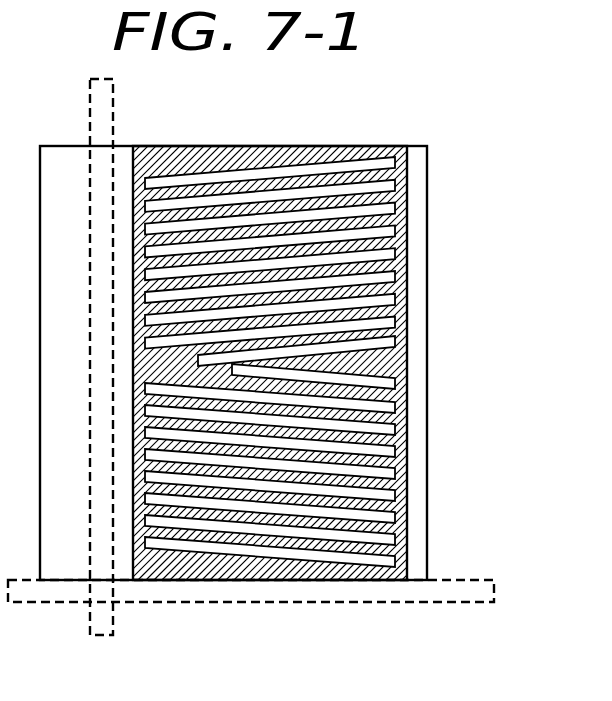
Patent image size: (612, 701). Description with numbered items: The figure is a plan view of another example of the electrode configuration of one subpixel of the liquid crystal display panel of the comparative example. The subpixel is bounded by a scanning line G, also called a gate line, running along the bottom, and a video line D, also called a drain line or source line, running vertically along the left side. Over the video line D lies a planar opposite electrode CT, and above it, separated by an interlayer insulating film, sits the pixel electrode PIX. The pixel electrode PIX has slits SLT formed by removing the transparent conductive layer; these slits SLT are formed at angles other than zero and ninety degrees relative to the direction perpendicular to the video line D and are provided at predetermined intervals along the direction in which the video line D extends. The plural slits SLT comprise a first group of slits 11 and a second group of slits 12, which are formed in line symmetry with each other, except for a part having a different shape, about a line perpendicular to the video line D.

The video line D is at (100, 120).
The scanning line G is at (499, 586).
The opposite electrode CT is at (422, 192).
The pixel electrode PIX is at (413, 362).
The slit SLT is at (385, 493).
The first group of slits 11 is at (407, 159).
The second group of slits 12 is at (407, 398).